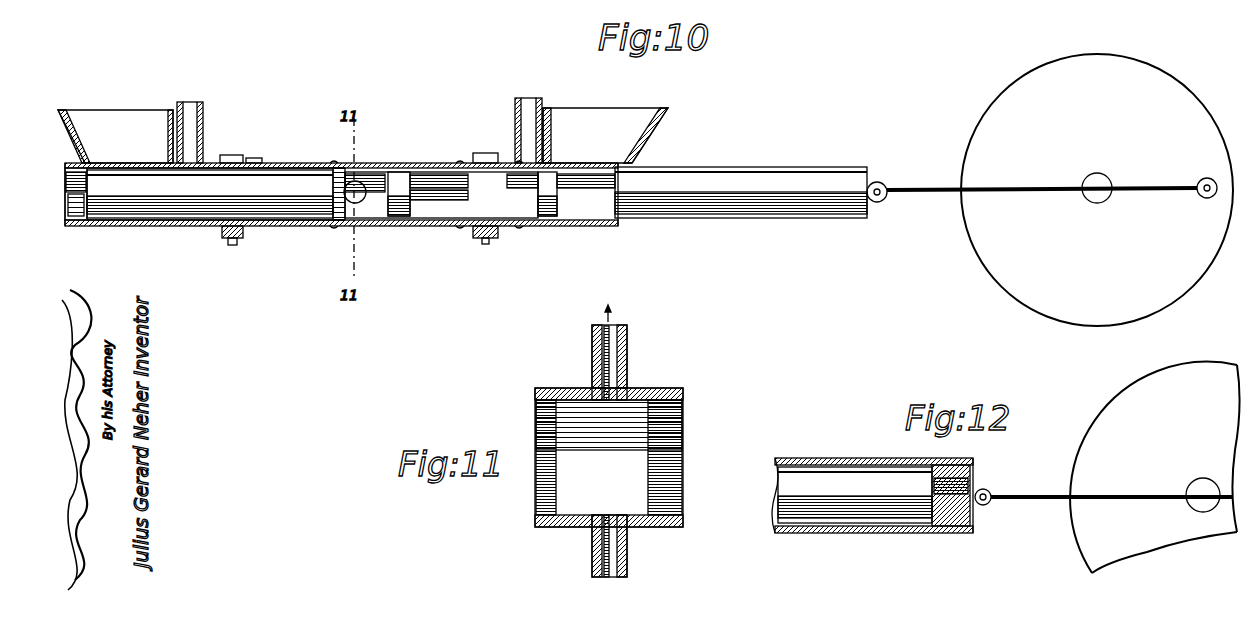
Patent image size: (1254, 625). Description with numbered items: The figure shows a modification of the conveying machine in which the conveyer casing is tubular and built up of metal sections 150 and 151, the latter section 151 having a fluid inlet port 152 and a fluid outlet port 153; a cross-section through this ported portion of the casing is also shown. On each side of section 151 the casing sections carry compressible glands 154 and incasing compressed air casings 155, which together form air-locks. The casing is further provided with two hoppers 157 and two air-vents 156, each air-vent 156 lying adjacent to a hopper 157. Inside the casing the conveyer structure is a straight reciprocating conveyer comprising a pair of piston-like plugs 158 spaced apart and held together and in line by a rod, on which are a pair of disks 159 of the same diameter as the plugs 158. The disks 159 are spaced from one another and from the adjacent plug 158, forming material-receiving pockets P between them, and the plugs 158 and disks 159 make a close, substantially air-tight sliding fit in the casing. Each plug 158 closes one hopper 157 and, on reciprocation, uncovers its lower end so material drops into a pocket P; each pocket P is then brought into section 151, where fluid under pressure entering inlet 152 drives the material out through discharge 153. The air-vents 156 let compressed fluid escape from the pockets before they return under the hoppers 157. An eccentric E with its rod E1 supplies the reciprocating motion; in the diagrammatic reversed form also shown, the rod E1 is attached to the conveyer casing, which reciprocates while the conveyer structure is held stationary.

In FIG. 10, the casing metal section 150 is at (297, 164).
In FIG. 12, the casing metal section 150 is at (860, 459).
In FIG. 10, the casing metal section 151 is at (158, 227).
In FIG. 11, the casing metal section 151 is at (672, 475).
In FIG. 11, the fluid inlet port 152 is at (615, 558).
In FIG. 10, the fluid outlet port 153 is at (353, 203).
In FIG. 11, the fluid outlet port 153 is at (613, 348).
In FIG. 10, the compressible gland 154 is at (218, 157).
In FIG. 10, the compressed air casing 155 is at (250, 163).
In FIG. 10, the air-vent 156 is at (193, 102).
In FIG. 10, the hopper 157 is at (107, 118).
In FIG. 10, the piston-like plug 158 is at (298, 225).
In FIG. 12, the piston-like plug 158 is at (870, 510).
In FIG. 10, the disk 159 is at (403, 203).
In FIG. 10, the material-receiving pocket P is at (580, 200).
In FIG. 10, the eccentric E is at (1083, 232).
In FIG. 12, the eccentric E is at (1154, 467).
In FIG. 10, the rod E1 is at (932, 193).
In FIG. 12, the rod E1 is at (1037, 503).